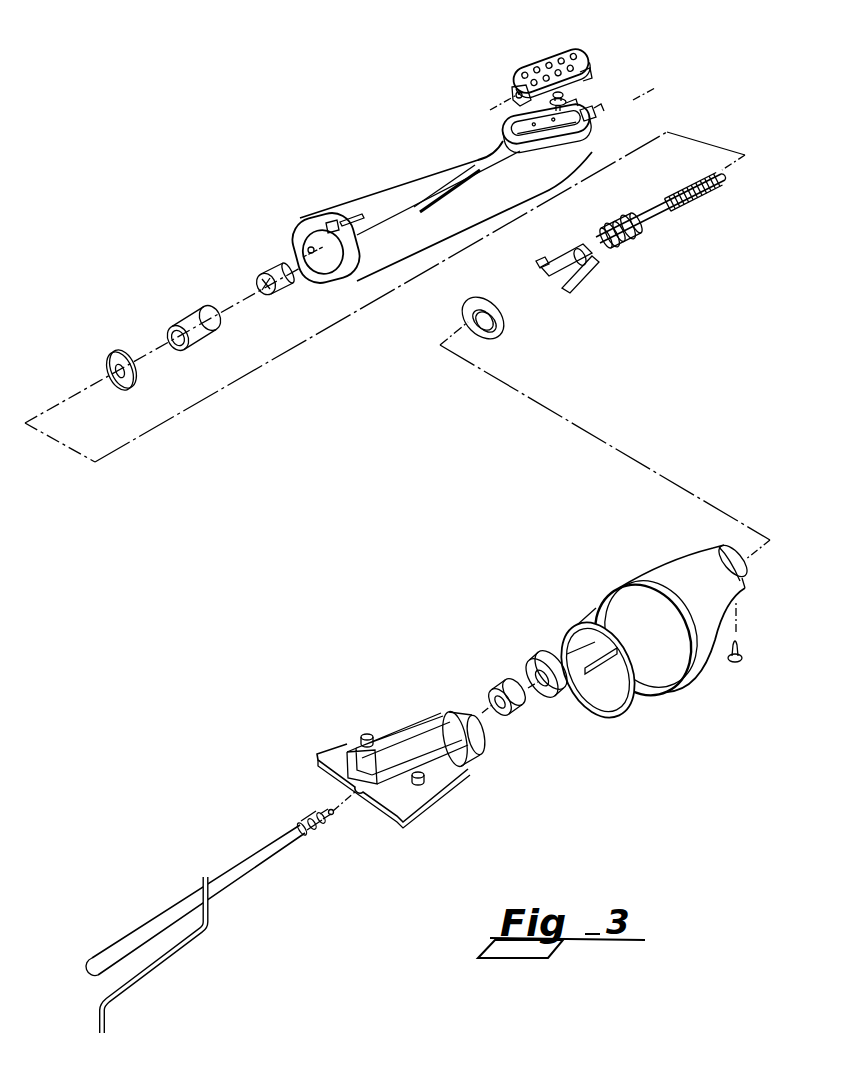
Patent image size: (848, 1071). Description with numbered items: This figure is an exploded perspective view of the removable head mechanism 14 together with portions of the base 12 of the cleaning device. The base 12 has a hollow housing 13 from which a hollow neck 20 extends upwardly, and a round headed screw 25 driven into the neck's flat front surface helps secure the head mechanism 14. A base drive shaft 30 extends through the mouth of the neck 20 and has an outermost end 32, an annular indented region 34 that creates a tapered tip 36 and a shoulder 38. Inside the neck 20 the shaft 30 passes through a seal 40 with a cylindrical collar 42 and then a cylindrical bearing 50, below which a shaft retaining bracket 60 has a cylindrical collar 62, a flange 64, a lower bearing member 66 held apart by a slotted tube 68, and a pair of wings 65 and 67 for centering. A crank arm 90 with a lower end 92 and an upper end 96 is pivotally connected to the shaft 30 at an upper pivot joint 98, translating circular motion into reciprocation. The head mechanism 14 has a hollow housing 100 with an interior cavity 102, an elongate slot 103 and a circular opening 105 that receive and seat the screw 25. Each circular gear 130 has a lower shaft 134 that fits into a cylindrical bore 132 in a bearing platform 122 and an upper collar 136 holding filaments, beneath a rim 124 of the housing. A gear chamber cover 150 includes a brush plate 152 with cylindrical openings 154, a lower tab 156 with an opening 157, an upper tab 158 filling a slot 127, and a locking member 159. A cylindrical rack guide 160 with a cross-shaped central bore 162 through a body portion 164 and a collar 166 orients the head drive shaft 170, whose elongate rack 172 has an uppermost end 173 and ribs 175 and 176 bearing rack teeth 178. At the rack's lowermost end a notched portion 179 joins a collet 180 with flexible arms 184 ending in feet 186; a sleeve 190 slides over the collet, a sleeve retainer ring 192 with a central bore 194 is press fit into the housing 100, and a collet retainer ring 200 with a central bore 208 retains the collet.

The base 12 is at (730, 722).
The hollow housing 13 is at (664, 601).
The head mechanism 14 is at (300, 126).
The hollow neck 20 is at (730, 550).
The round headed screw 25 is at (737, 663).
The base drive shaft 30 is at (224, 853).
The outermost end 32 is at (308, 832).
The annular indented region 34 is at (314, 818).
The tip 36 is at (310, 812).
The shoulder 38 is at (312, 832).
The seal 40 is at (500, 680).
The cylindrical collar 42 is at (540, 660).
The cylindrical bearing 50 is at (467, 715).
The shaft retaining bracket 60 is at (416, 759).
The cylindrical collar 62 is at (463, 717).
The flange 64 is at (493, 727).
The wing 65 is at (333, 757).
The lower bearing member 66 is at (367, 787).
The wing 67 is at (405, 802).
The slotted tube 68 is at (392, 740).
The crank arm 90 is at (203, 935).
The lower end 92 is at (108, 1030).
The upper end 96 is at (210, 903).
The upper pivot joint 98 is at (198, 892).
The hollow housing 100 is at (421, 217).
The interior cavity 102 is at (308, 251).
The elongate slot 103 is at (350, 220).
The circular opening 105 is at (333, 221).
The bearing platform 122 is at (561, 138).
The cradle rim 124 is at (556, 125).
The slot 127 is at (594, 116).
The circular gear 130 is at (612, 100).
The cylindrical bore 132 is at (570, 130).
The lower shaft 134 is at (596, 110).
The upper collar 136 is at (563, 99).
The gear chamber cover 150 is at (547, 53).
The brush plate 152 is at (568, 52).
The cylindrical openings 154 is at (562, 52).
The lower tab 156 is at (512, 74).
The opening 157 is at (512, 97).
The upper tab 158 is at (588, 70).
The locking member 159 is at (582, 80).
The cylindrical rack guide 160 is at (272, 270).
The cross-shaped central bore 162 is at (235, 266).
The body portion 164 is at (284, 288).
The collar 166 is at (290, 280).
The head drive shaft 170 is at (591, 283).
The elongate rack 172 is at (714, 187).
The uppermost end 173 is at (718, 179).
The rib 175 is at (658, 202).
The rib 176 is at (672, 222).
The rack teeth 178 is at (696, 175).
The notched portion 179 is at (610, 237).
The collet 180 is at (597, 230).
The flexible arms 184 is at (585, 280).
The feet 186 is at (550, 268).
The sleeve 190 is at (180, 312).
The sleeve retainer ring 192 is at (108, 358).
The central bore 194 is at (85, 348).
The collet retainer ring 200 is at (453, 349).
The central bore 208 is at (444, 347).